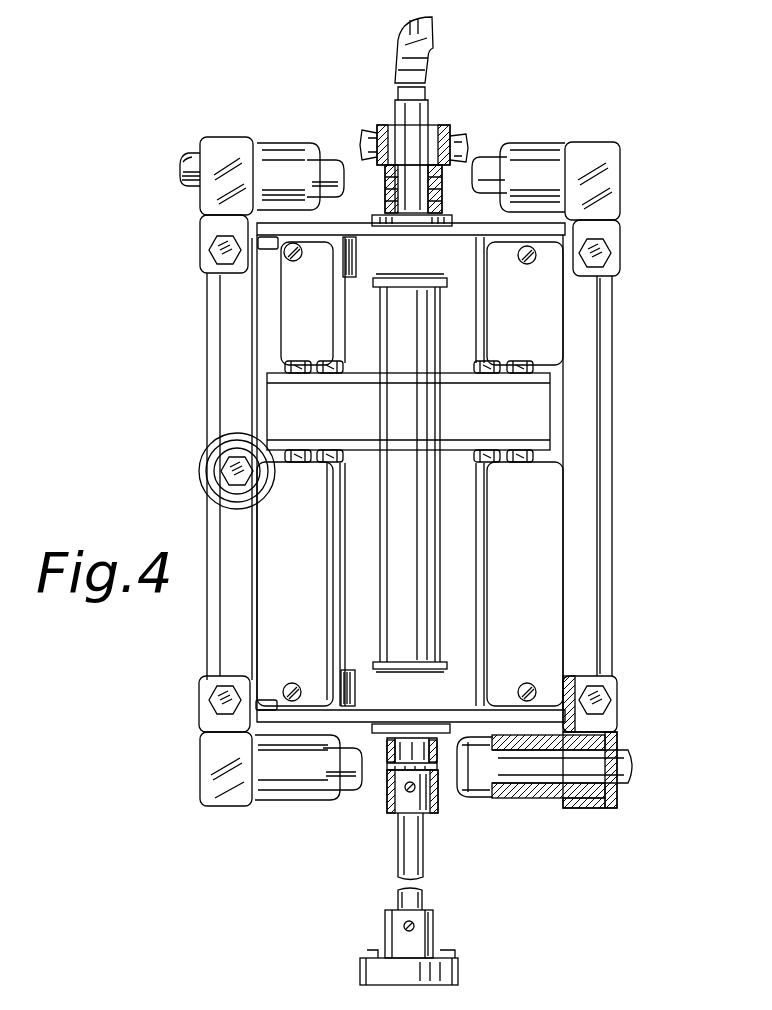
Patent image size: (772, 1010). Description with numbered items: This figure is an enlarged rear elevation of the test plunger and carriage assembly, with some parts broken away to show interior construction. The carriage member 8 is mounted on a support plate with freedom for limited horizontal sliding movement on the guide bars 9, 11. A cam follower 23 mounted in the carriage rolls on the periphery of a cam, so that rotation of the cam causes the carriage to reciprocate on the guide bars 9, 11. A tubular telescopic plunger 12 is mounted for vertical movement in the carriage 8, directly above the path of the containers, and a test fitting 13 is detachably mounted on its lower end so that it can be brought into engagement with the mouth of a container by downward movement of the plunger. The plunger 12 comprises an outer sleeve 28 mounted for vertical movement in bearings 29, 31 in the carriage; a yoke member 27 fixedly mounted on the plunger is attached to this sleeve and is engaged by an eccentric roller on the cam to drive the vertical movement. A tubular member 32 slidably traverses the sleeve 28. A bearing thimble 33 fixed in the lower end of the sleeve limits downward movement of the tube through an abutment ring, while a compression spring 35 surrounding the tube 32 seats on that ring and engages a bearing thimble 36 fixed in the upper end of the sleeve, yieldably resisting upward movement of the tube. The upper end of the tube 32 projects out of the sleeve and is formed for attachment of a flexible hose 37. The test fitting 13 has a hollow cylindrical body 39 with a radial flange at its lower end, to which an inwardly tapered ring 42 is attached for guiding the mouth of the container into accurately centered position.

The carriage member 8 is at (616, 352).
The guide bar 9 is at (612, 768).
The guide bar 11 is at (196, 160).
The tubular telescopic plunger 12 is at (448, 526).
The test fitting 13 is at (418, 945).
The cam follower 23 is at (204, 486).
The yoke member 27 is at (530, 423).
The outer sleeve 28 is at (418, 600).
The bearing 29 is at (360, 266).
The bearing 31 is at (364, 692).
The tubular member 32 is at (430, 196).
The bearing thimble 33 is at (398, 797).
The compression spring 35 is at (432, 765).
The bearing thimble 36 is at (396, 150).
The flexible hose 37 is at (420, 32).
The hollow cylindrical body 39 is at (395, 935).
The inwardly tapered ring 42 is at (445, 968).